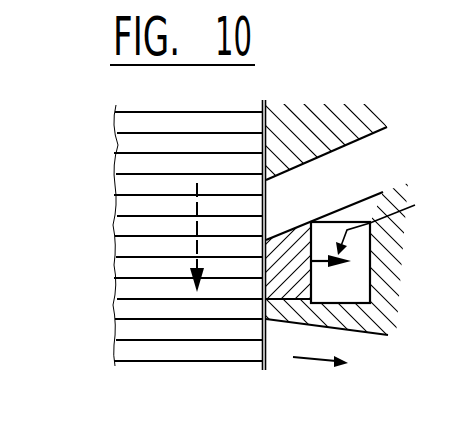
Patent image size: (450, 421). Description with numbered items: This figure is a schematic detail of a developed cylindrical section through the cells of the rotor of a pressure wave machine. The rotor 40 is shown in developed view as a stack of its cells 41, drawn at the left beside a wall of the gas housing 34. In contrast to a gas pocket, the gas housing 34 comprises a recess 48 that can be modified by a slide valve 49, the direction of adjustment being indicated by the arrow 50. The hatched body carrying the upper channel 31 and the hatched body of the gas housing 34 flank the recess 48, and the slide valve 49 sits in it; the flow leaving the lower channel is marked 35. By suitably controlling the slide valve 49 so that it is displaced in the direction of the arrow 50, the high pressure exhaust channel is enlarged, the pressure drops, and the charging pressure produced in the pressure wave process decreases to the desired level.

The rotor 40 is at (98, 152).
The cells 41 is at (130, 287).
The upper channel / inlet flow 31 is at (326, 186).
The arrow 50 is at (392, 221).
The recess 48 is at (350, 280).
The gas housing 34 is at (372, 318).
The outlet flow 35 is at (341, 367).
The slide valve 49 is at (288, 325).